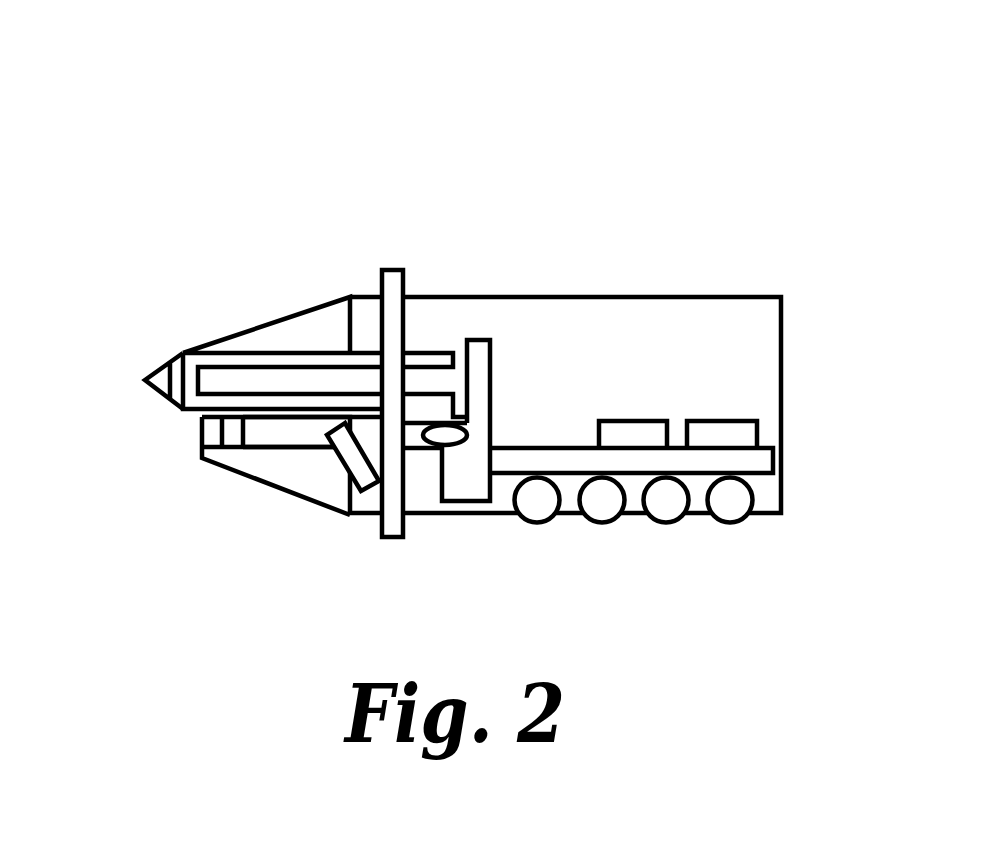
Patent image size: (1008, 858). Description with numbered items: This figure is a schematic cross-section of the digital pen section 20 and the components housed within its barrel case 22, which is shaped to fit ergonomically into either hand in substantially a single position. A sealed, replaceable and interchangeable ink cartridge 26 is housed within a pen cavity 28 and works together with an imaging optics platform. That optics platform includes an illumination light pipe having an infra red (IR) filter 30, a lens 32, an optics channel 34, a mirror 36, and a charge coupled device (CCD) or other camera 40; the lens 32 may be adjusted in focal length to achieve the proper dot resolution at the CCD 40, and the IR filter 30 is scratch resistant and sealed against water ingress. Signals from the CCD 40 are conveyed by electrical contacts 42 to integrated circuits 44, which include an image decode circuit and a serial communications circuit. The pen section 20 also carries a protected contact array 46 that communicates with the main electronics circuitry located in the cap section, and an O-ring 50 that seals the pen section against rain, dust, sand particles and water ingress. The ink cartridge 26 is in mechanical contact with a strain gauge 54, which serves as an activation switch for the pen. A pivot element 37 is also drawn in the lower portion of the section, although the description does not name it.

The digital pen section 20 is at (165, 122).
The barrel case 22 is at (747, 345).
The ink cartridge 26 is at (217, 380).
The pen cavity 28 is at (268, 362).
The IR filter 30 is at (207, 428).
The lens 32 is at (235, 437).
The optics channel 34 is at (288, 437).
The mirror 36 is at (368, 467).
The pivot 37 is at (438, 437).
The charge coupled device (CCD) camera 40 is at (463, 487).
The electrical contacts 42 is at (763, 465).
The integrated circuits 44 is at (742, 433).
The protected contact array 46 is at (535, 525).
The O-ring 50 is at (392, 285).
The strain gauge 54 is at (477, 355).